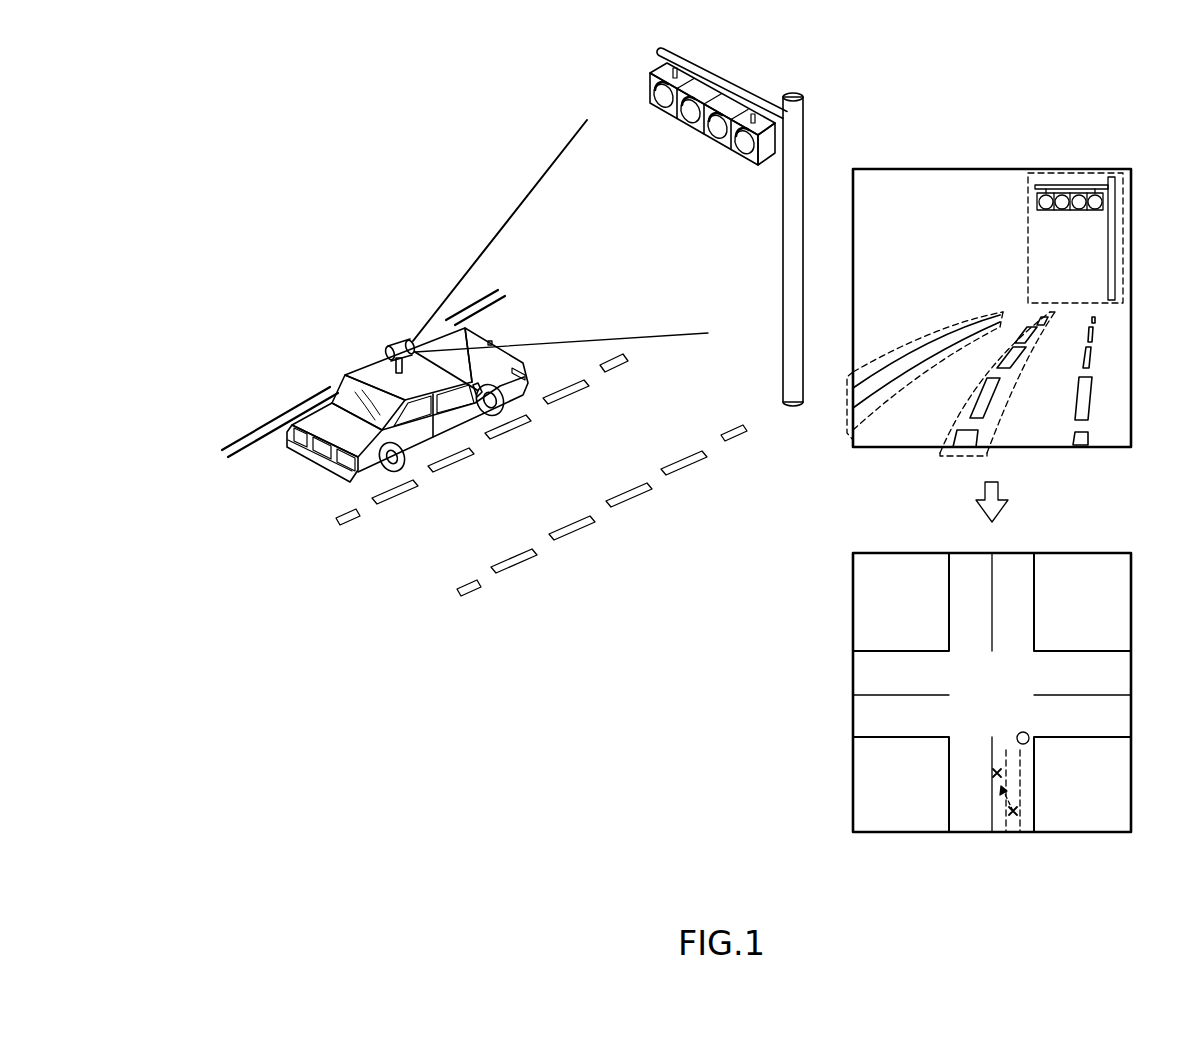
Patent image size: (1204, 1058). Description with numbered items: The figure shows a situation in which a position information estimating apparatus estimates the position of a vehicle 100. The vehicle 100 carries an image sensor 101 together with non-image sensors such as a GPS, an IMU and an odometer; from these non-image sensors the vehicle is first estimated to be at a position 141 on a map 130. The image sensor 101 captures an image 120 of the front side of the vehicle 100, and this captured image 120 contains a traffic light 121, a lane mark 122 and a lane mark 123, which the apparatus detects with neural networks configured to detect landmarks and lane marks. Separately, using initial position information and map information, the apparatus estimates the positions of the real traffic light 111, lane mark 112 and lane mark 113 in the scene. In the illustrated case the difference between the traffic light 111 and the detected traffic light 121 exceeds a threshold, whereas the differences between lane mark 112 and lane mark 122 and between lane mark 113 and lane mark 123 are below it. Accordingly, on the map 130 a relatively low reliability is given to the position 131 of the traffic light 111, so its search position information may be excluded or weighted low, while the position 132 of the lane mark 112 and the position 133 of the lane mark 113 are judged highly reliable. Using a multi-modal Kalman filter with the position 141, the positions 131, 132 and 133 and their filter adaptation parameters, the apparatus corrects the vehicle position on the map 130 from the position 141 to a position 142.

The vehicle 100 is at (353, 372).
The image sensor 101 is at (398, 346).
The traffic light 111 is at (799, 92).
The lane mark 112 is at (268, 428).
The lane mark 113 is at (392, 494).
The image 120 is at (1068, 167).
The traffic light 121 is at (1027, 238).
The lane mark 122 is at (912, 340).
The lane mark 123 is at (955, 450).
The map 130 is at (1068, 552).
The position of the traffic light 131 is at (1030, 734).
The position of the lane mark 132 is at (991, 810).
The position of the lane mark 133 is at (1020, 772).
The position 141 is at (1015, 817).
The position 142 is at (995, 772).